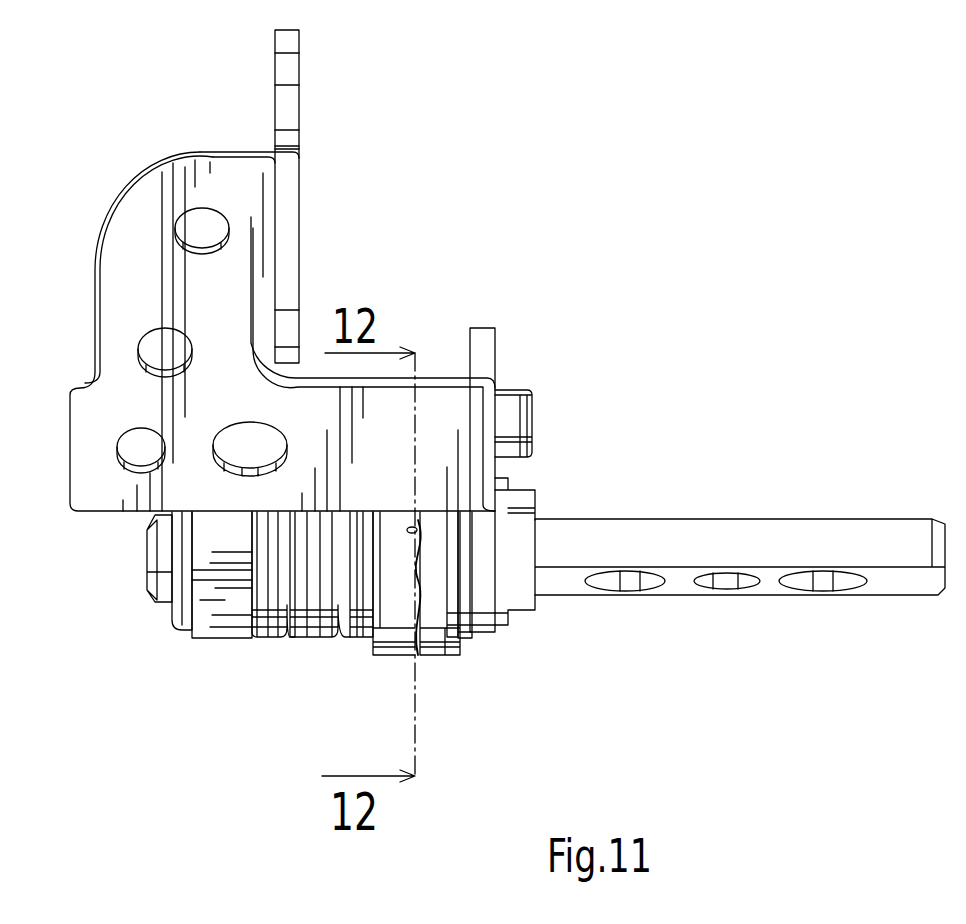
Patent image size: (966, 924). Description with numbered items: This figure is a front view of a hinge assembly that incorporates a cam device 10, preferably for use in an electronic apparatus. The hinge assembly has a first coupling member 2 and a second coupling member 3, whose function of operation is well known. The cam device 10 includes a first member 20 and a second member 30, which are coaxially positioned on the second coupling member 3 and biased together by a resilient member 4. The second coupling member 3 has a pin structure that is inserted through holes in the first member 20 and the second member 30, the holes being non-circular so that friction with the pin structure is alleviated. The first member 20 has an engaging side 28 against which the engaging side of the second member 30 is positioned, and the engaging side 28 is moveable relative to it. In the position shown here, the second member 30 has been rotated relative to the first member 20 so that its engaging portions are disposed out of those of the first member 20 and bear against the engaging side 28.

The first coupling member 2 is at (118, 250).
The second coupling member 3 is at (685, 575).
The resilient member 4 is at (315, 605).
The cam device 10 is at (438, 744).
The first member 20 is at (443, 637).
The engaging side 28 is at (414, 530).
The second member 30 is at (393, 640).